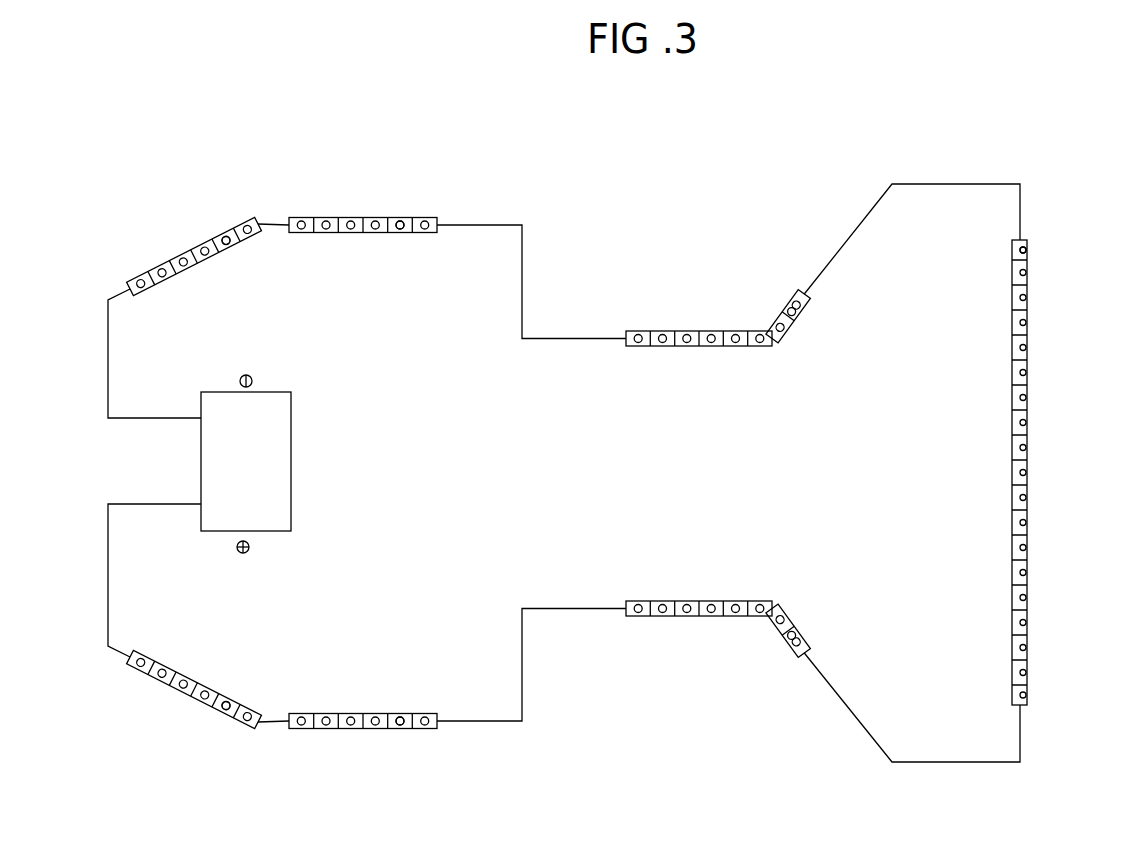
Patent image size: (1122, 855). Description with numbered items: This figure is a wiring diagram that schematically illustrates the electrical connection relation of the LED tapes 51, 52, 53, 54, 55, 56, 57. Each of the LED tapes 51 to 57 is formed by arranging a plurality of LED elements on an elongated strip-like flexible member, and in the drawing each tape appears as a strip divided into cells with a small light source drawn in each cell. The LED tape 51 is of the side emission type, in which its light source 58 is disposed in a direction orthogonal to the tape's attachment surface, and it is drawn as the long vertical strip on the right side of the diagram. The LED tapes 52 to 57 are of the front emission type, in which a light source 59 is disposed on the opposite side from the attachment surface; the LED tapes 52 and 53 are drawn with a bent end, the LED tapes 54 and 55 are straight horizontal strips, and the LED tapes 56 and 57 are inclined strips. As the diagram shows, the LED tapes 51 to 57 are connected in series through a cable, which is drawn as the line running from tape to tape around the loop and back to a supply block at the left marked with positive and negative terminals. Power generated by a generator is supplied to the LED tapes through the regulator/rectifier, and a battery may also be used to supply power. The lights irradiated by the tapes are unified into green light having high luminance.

The LED tape 51 is at (1020, 242).
The LED tape 52 is at (800, 648).
The LED tape 53 is at (798, 295).
The LED tape 54 is at (433, 728).
The LED tape 55 is at (433, 218).
The LED tape 56 is at (252, 728).
The LED tape 57 is at (250, 218).
The light source 58 is at (1027, 248).
The light source 59 is at (218, 232).